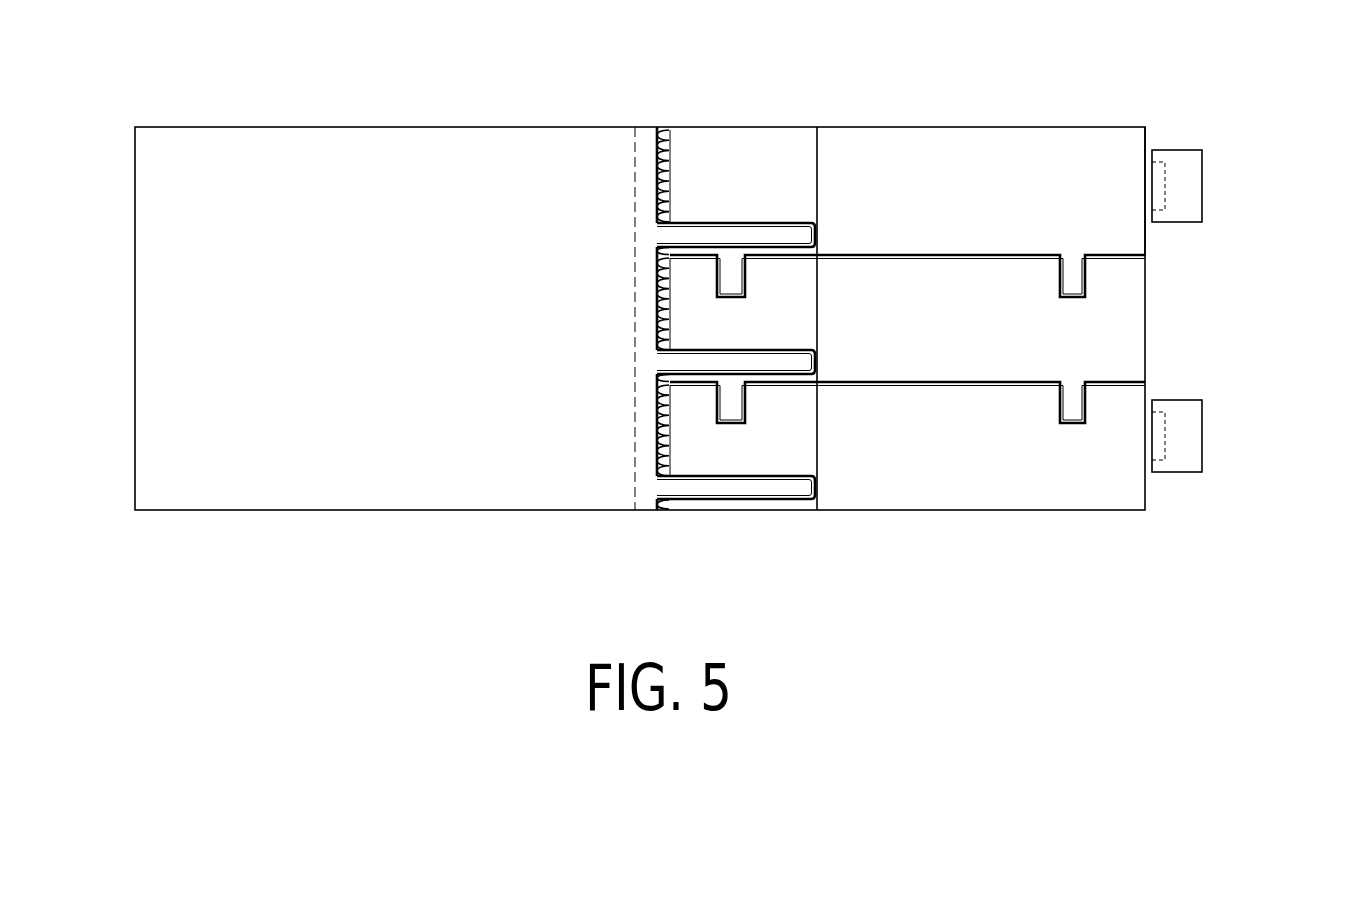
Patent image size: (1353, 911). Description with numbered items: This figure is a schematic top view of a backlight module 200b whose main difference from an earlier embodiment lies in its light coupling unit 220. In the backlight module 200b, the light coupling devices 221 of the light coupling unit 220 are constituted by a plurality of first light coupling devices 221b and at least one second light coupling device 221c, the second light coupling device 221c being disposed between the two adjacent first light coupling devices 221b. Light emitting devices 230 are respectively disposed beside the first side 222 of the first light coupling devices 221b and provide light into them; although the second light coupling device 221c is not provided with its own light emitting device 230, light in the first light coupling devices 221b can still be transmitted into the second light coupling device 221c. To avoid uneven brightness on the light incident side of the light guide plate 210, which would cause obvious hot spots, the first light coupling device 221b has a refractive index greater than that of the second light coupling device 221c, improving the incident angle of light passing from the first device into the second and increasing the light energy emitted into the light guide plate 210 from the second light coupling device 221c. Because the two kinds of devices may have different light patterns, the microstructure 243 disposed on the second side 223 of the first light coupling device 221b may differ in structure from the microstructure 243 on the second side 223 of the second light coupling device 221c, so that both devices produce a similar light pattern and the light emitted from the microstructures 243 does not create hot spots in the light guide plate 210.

The backlight module 200b is at (1303, 598).
The light guide plate 210 is at (320, 148).
The light coupling unit 220 is at (855, 108).
The light coupling devices 221 is at (998, 323).
The first light coupling device 221b is at (948, 152).
The second light coupling device 221c is at (1128, 322).
The first side 222 is at (1143, 147).
The second side 223 is at (685, 284).
The light emitting device 230 is at (1188, 187).
The microstructure 243 is at (656, 302).